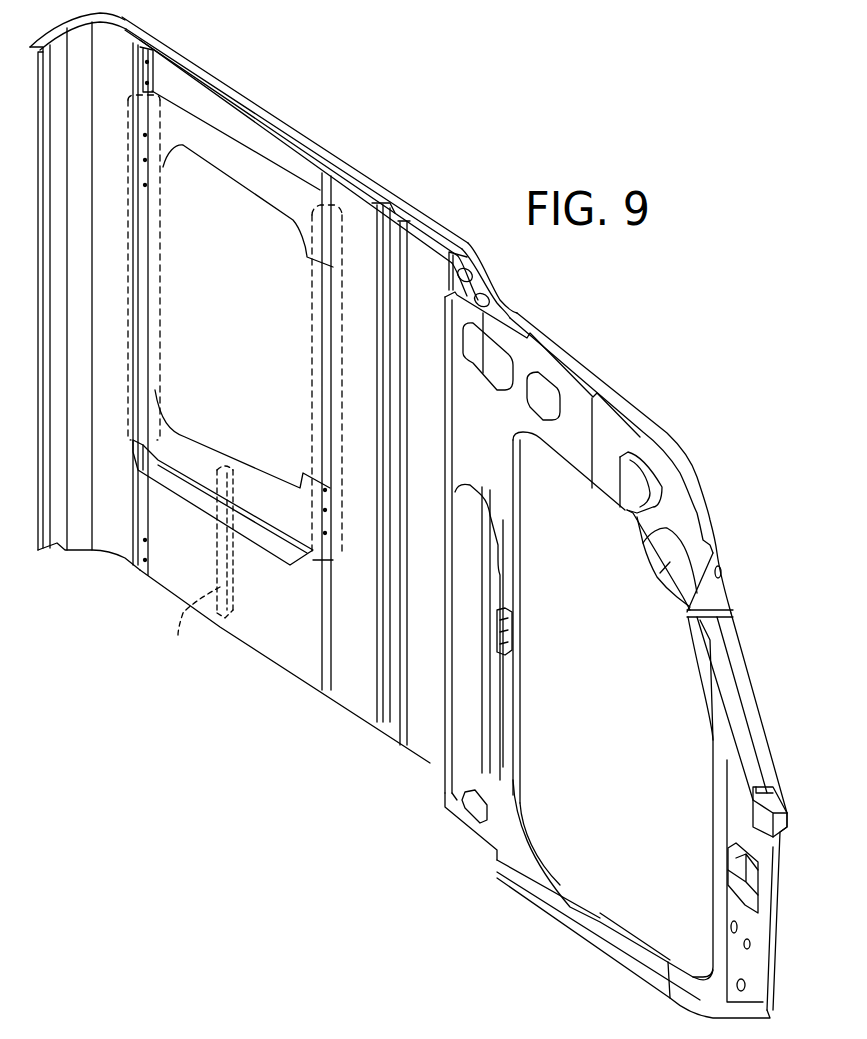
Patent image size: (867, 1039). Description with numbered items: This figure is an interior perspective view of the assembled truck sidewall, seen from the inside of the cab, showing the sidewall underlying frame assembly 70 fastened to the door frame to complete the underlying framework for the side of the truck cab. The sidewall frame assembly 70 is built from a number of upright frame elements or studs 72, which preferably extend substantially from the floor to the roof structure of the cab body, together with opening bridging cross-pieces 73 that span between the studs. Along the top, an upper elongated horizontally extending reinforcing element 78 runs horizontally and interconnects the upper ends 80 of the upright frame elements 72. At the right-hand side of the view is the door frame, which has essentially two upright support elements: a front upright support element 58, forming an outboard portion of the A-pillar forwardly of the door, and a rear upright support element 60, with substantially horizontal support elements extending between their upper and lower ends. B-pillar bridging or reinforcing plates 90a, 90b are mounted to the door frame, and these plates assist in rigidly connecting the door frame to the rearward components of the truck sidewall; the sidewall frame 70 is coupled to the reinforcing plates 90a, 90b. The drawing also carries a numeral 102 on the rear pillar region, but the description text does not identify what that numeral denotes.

The front upright support element 58 is at (787, 923).
The rear upright support element 60 is at (495, 702).
The sidewall underlying frame assembly 70 is at (256, 676).
The upright frame elements 72 is at (148, 558).
The opening bridging cross-pieces 73 is at (240, 165).
The upper elongated horizontally extending reinforcing element 78 is at (290, 133).
The upper ends of the upright frame elements 80 is at (320, 170).
The B-pillar bridging or reinforcing plate 90a is at (458, 778).
The B-pillar bridging or reinforcing plate 90b is at (563, 443).
The pillar reinforcement 102 is at (637, 667).